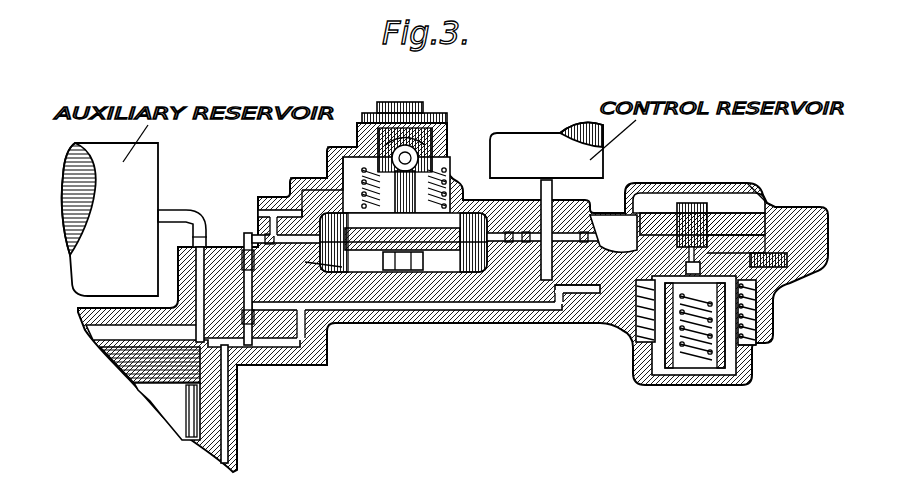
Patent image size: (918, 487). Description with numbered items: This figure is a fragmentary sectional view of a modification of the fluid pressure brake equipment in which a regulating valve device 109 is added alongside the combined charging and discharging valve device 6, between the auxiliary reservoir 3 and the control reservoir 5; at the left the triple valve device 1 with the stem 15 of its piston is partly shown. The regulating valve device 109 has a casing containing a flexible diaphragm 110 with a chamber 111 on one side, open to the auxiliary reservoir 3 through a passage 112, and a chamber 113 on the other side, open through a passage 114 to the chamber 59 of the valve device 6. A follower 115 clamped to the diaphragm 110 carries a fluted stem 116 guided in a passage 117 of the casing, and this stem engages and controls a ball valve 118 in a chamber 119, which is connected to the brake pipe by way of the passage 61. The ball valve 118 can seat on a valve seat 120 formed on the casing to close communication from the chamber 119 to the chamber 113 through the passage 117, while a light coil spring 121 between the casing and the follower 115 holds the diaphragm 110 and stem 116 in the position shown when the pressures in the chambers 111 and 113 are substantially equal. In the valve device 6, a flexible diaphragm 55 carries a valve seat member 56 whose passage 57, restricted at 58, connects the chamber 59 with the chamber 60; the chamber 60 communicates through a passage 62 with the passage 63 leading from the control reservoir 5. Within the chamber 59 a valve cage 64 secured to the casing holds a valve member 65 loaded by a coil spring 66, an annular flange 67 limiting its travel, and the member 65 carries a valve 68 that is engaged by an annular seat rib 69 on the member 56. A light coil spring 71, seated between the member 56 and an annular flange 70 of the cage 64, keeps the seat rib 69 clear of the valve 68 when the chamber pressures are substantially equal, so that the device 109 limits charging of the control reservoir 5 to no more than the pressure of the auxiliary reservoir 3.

The triple valve device 1 is at (78, 310).
The auxiliary reservoir 3 is at (110, 219).
The control reservoir 5 is at (515, 143).
The combined charging and discharging valve device 6 is at (692, 202).
The stem 15 is at (170, 403).
The flexible diaphragm 55 is at (788, 223).
The valve seat member 56 is at (743, 207).
The passage 57 is at (700, 223).
The restriction 58 is at (720, 217).
The chamber 59 is at (633, 308).
The chamber 60 is at (640, 192).
The passage 61 is at (97, 328).
The passage 62 is at (584, 216).
The passage 63 is at (224, 415).
The valve cage 64 is at (655, 362).
The valve member 65 is at (665, 366).
The coil spring 66 is at (677, 360).
The annular flange 67 is at (655, 262).
The valve 68 is at (767, 287).
The annular seat rib 69 is at (777, 207).
The annular flange 70 is at (750, 327).
The light coil spring 71 is at (753, 303).
The regulating valve device 109 is at (327, 170).
The flexible diaphragm 110 is at (268, 238).
The chamber 111 is at (313, 262).
The passage 112 is at (318, 282).
The chamber 113 is at (277, 224).
The passage 114 is at (592, 288).
The follower 115 is at (277, 190).
The fluted stem 116 is at (407, 208).
The passage 117 is at (413, 182).
The ball valve 118 is at (427, 150).
The chamber 119 is at (450, 96).
The valve seat 120 is at (328, 170).
The light coil spring 121 is at (440, 217).